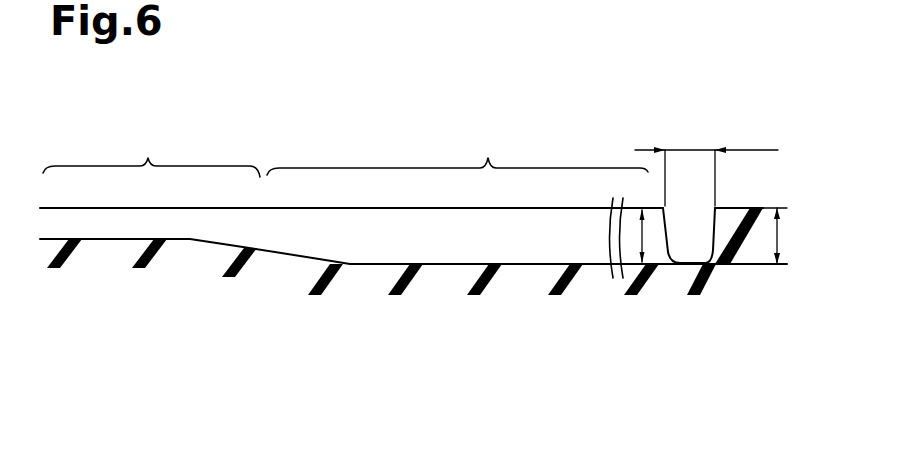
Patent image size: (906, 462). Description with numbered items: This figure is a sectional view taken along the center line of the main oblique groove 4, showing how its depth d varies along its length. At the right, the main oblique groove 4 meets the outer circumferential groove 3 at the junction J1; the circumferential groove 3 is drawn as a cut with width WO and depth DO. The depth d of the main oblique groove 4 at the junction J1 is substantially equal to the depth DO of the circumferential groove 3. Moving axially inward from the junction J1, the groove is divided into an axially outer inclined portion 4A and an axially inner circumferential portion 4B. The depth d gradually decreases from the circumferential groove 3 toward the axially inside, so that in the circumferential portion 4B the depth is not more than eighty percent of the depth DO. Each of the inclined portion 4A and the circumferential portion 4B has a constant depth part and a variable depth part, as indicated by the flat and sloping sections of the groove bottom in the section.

The outer circumferential groove 3 is at (703, 242).
The main oblique groove 4 is at (383, 262).
The inclined portion 4A is at (515, 211).
The circumferential portion 4B is at (151, 201).
The junction J1 is at (640, 143).
The depth of the main oblique groove d is at (642, 234).
The width of the outer circumferential groove WO is at (706, 164).
The depth of the circumferential groove DO is at (793, 236).